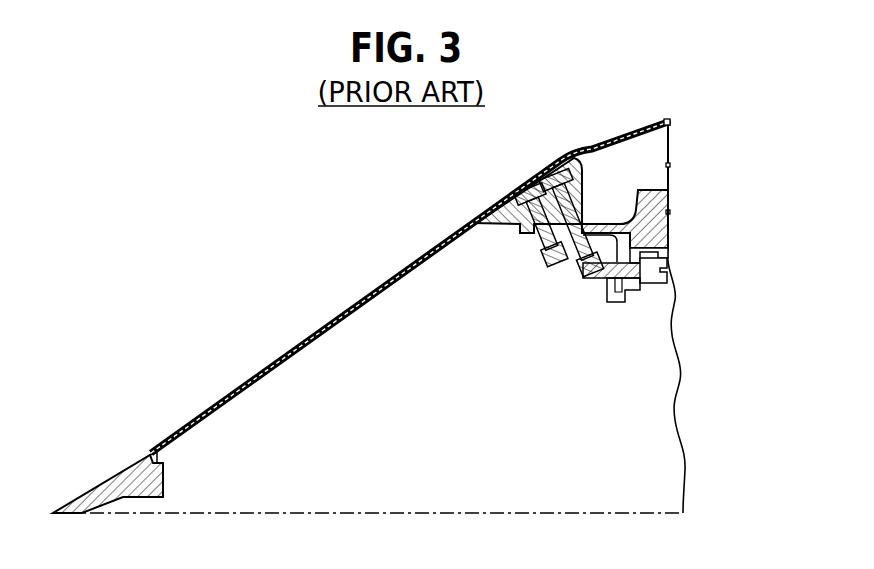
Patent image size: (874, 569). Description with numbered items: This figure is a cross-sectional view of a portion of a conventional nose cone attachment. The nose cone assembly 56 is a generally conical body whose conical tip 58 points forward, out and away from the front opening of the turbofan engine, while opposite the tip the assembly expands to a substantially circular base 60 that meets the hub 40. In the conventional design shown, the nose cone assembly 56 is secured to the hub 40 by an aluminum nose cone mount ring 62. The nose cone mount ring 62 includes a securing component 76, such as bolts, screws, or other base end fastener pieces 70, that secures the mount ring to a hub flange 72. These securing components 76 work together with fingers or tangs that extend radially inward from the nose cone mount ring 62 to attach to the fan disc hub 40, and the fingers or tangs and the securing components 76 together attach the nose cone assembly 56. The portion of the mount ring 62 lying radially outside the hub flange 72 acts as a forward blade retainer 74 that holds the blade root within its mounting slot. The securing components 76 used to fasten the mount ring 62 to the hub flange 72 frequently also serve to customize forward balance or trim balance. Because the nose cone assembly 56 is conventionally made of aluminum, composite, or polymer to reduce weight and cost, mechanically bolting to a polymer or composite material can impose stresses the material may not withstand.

The hub 40 is at (672, 165).
The nose cone assembly 56 is at (300, 313).
The conical tip 58 is at (112, 466).
The substantially circular base 60 is at (653, 121).
The nose cone mount ring 62 is at (653, 190).
The base end fastener pieces 70 is at (660, 272).
The hub flange 72 is at (650, 250).
The forward blade retainer 74 is at (681, 197).
The securing component 76 is at (534, 186).